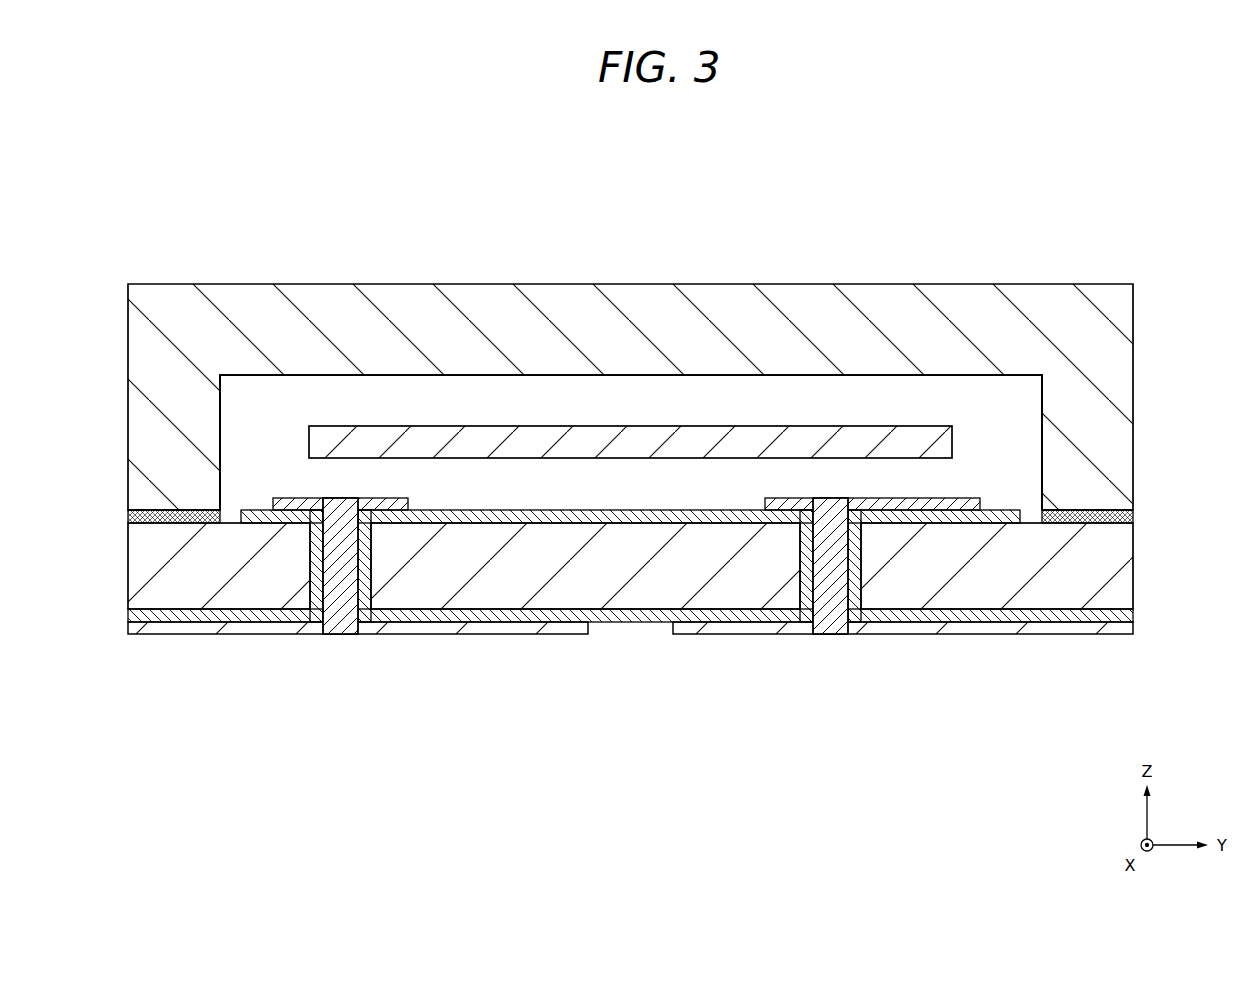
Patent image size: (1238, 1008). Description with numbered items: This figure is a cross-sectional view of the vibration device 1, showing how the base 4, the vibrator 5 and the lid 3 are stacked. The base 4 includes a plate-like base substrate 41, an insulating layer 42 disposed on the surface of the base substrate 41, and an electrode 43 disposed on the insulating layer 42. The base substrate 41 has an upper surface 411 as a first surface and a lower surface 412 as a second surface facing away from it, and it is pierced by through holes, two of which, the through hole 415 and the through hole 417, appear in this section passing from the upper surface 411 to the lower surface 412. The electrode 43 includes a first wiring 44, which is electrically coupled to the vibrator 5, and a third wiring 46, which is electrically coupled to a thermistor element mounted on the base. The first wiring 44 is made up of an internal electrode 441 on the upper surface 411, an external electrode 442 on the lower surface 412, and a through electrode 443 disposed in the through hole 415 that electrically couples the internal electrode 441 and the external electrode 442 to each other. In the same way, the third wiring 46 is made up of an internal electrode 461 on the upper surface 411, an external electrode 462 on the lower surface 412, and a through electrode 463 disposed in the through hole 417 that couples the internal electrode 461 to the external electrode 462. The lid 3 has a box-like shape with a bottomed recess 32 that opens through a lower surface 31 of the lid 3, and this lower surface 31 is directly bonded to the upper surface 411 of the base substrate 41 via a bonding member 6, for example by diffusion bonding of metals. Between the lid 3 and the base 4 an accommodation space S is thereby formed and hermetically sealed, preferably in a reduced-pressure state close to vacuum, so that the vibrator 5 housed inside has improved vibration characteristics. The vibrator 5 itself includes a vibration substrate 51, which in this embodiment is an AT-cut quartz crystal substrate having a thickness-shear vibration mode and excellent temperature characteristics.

The vibration device 1 is at (1138, 187).
The lid 3 is at (423, 323).
The lower surface 31 is at (178, 527).
The bottomed recess 32 is at (331, 384).
The accommodation space S is at (1003, 410).
The base 4 is at (122, 523).
The base substrate 41 is at (1050, 570).
The upper surface 411 is at (575, 508).
The lower surface 412 is at (548, 614).
The through hole 415 is at (862, 563).
The through hole 417 is at (370, 563).
The insulating layer 42 is at (628, 616).
The electrode 43 is at (630, 477).
The first wiring 44 is at (712, 641).
The internal electrode 441 is at (895, 497).
The external electrode 442 is at (975, 616).
The through electrode 443 is at (828, 570).
The third wiring 46 is at (483, 641).
The internal electrode 461 is at (293, 498).
The external electrode 462 is at (268, 616).
The through electrode 463 is at (342, 570).
The vibrator 5 is at (636, 412).
The vibration substrate 51 is at (797, 443).
The bonding member 6 is at (153, 512).